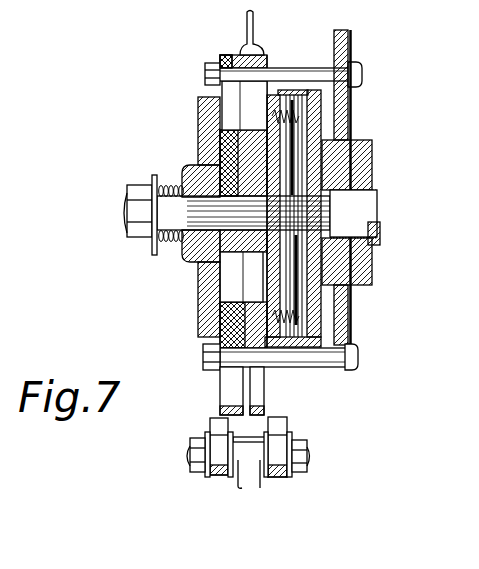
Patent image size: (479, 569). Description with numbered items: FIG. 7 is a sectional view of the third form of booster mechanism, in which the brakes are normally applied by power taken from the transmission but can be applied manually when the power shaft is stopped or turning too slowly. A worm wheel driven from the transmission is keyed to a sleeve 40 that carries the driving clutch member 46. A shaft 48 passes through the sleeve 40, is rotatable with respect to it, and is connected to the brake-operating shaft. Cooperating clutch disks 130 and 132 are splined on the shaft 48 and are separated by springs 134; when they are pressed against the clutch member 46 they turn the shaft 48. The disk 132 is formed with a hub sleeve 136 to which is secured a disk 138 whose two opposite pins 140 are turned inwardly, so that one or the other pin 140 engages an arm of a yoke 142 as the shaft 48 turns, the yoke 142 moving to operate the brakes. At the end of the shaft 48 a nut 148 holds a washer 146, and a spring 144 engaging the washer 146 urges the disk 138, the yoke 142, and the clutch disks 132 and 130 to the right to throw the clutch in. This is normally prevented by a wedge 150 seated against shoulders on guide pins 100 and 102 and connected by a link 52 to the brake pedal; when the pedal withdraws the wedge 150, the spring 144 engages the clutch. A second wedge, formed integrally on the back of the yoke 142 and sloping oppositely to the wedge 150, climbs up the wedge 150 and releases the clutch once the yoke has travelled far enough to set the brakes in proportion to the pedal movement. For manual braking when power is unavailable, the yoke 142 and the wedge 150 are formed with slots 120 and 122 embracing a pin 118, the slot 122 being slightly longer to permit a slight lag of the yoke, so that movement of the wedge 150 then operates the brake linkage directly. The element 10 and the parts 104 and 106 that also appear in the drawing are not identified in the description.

The drum wall 10 is at (349, 121).
The sleeve 40 is at (352, 287).
The driving clutch member 46 is at (350, 97).
The shaft 48 is at (362, 212).
The link 52 is at (257, 20).
The guide pin 100 is at (268, 98).
The guide pin 102 is at (271, 360).
The hub window 104 is at (250, 112).
The fork arm 106 is at (258, 396).
The pin 118 is at (210, 477).
The slot 120 is at (224, 432).
The slot 122 is at (272, 430).
The clutch disk 130 is at (301, 95).
The clutch disk 132 is at (235, 56).
The springs 134 is at (288, 90).
The hub sleeve 136 is at (228, 250).
The disk 138 is at (203, 305).
The pins 140 is at (188, 167).
The yoke 142 is at (199, 132).
The spring 144 is at (174, 242).
The washer 146 is at (155, 248).
The nut 148 is at (143, 214).
The wedge 150 is at (237, 363).